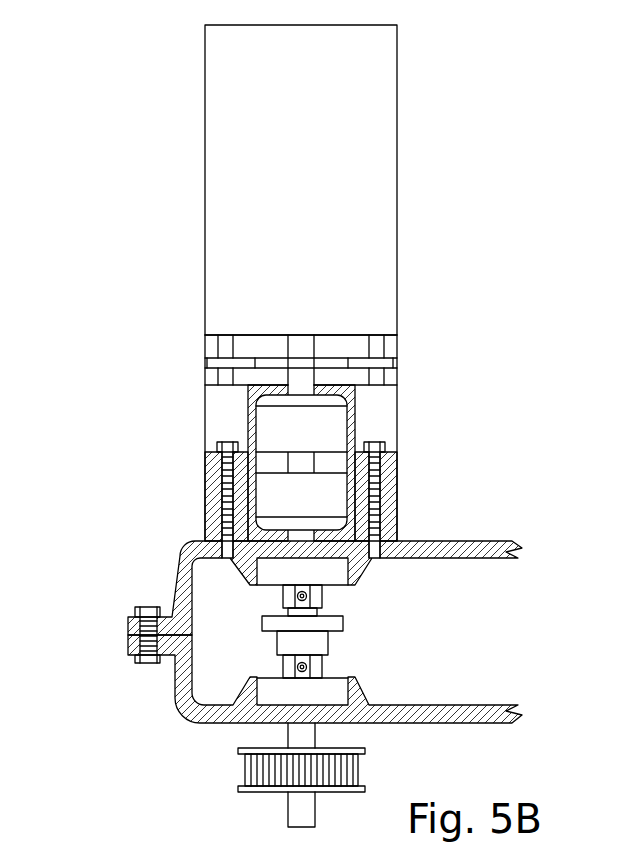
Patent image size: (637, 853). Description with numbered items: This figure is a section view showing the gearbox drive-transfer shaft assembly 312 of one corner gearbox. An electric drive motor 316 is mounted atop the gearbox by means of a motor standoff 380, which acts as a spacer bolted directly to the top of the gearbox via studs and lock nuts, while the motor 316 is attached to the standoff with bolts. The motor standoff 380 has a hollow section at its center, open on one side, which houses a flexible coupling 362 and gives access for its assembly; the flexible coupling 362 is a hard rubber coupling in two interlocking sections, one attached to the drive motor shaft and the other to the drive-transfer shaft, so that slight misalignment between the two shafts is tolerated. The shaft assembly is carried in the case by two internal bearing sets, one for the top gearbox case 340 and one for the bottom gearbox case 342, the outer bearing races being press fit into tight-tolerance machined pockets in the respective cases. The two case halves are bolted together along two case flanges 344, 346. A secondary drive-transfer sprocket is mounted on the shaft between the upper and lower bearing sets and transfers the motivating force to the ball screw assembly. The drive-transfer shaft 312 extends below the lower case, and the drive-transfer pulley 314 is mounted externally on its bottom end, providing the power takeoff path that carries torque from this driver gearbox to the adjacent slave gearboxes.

The drive-transfer shaft assembly 312 is at (315, 812).
The drive-transfer pulley 314 is at (358, 770).
The electric drive motor 316 is at (397, 133).
The top gearbox case 340 is at (178, 557).
The bottom gearbox case 342 is at (177, 703).
The case flange 344 is at (130, 625).
The case flange 346 is at (130, 638).
The flexible drive coupling 362 is at (345, 423).
The motor standoff 380 is at (212, 430).